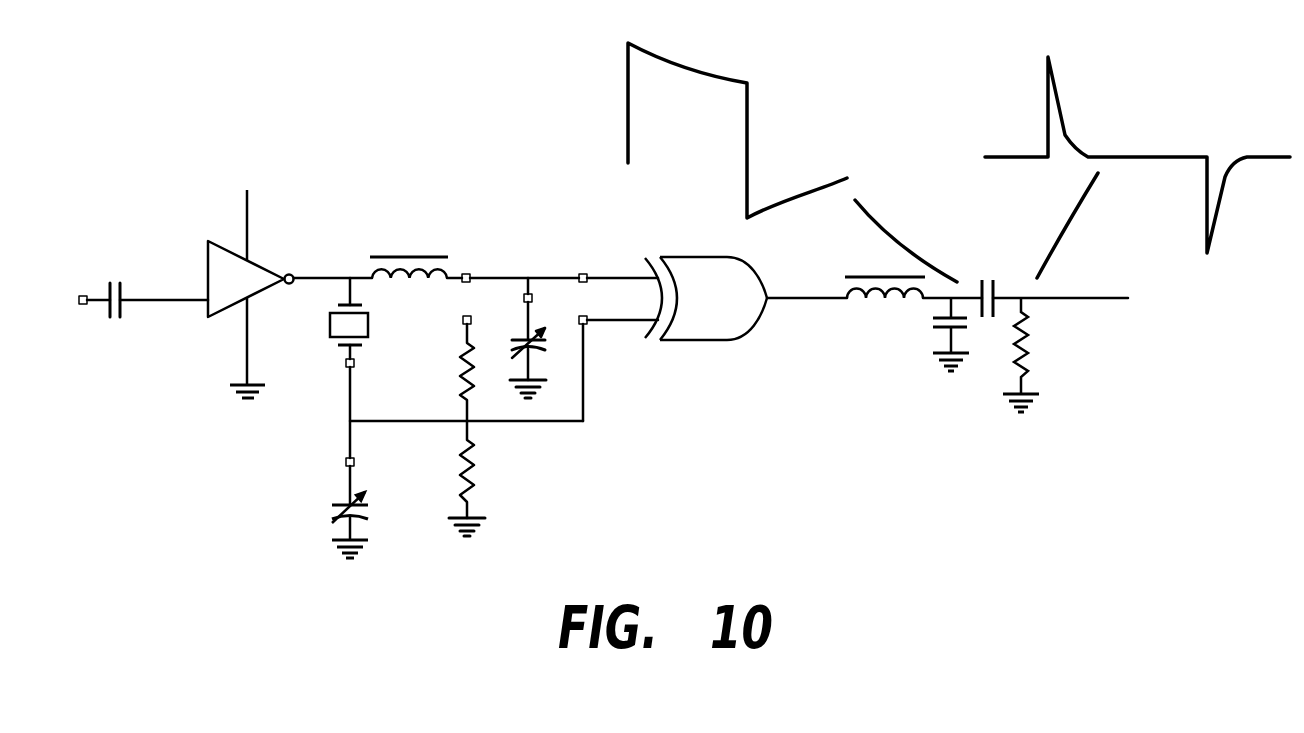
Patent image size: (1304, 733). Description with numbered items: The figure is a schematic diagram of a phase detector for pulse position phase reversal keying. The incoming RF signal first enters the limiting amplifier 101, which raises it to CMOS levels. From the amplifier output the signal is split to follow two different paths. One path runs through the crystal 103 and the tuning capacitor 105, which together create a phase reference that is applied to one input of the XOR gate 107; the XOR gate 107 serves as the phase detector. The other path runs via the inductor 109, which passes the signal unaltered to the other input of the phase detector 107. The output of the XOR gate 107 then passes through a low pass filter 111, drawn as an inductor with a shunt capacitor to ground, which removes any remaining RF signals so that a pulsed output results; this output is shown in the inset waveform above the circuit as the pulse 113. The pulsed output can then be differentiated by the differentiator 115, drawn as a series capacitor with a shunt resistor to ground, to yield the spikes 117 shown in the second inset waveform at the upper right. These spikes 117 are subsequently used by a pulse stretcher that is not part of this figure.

The limiting amplifier 101 is at (267, 255).
The crystal 103 is at (328, 347).
The tuning capacitor 105 is at (325, 515).
The XOR gate 107 is at (693, 330).
The inductor 109 is at (413, 255).
The low pass filter 111 is at (898, 360).
The pulse 113 is at (753, 137).
The differentiator 115 is at (1070, 387).
The spikes 117 is at (1072, 120).